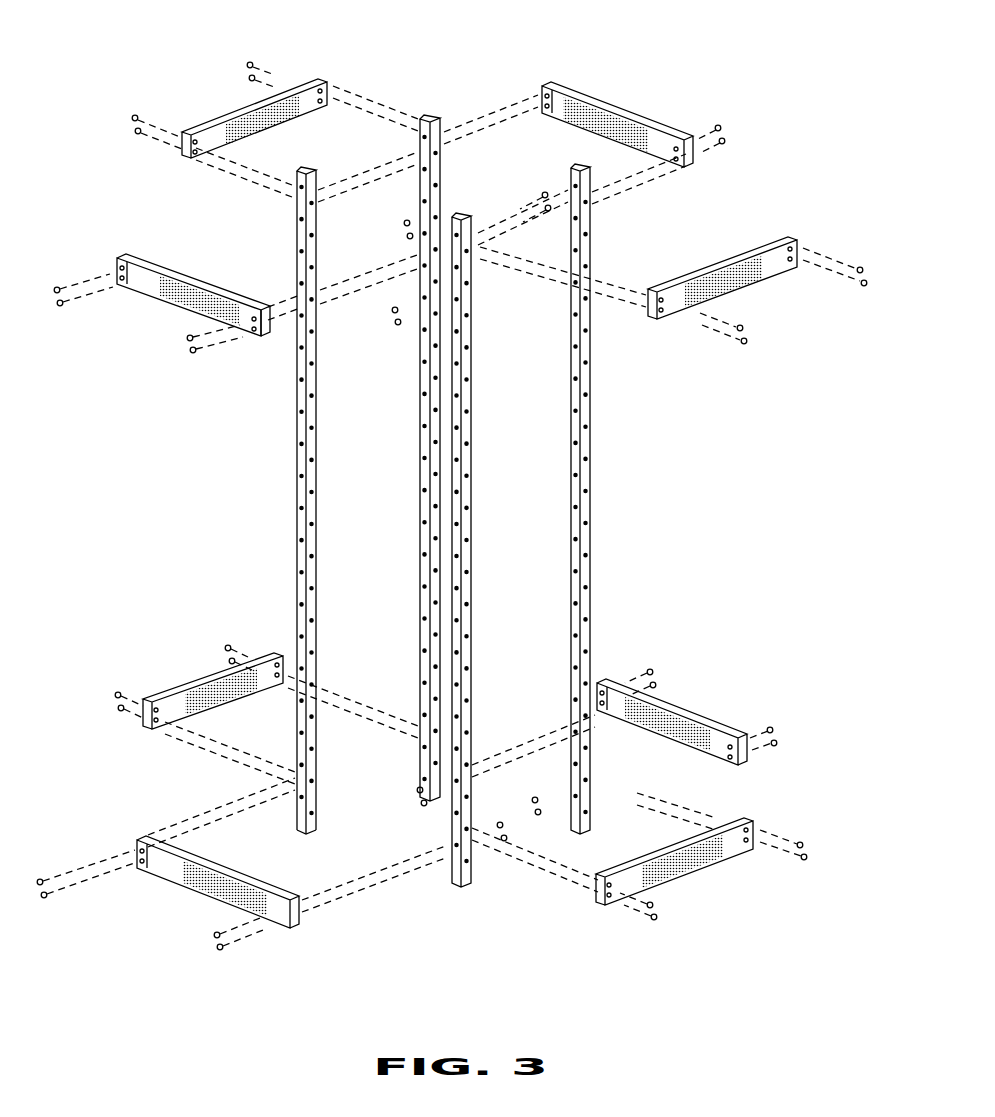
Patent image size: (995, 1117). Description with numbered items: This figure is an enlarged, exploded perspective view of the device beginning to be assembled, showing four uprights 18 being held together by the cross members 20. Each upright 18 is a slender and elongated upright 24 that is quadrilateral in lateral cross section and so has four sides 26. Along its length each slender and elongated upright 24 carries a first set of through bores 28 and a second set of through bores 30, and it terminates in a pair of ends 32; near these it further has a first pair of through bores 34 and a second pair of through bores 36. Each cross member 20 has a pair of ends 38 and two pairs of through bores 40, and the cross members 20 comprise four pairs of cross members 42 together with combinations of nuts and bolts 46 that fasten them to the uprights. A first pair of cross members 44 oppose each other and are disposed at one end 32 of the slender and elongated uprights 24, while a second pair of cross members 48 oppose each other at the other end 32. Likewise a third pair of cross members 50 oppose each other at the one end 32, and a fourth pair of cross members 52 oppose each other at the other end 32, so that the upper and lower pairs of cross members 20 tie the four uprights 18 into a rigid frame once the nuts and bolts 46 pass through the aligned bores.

The upright 18 is at (269, 497).
The cross member 20 is at (241, 93).
The slender and elongated upright 24 is at (292, 497).
The side 26 is at (297, 462).
The first set of through bores 28 is at (308, 571).
The second set of through bores 30 is at (306, 547).
The end 32 is at (304, 167).
The first pair of through bores 34 is at (311, 204).
The second pair of through bores 36 is at (300, 203).
The end 38 is at (117, 266).
The through bores 40 is at (122, 258).
The four pair of cross members 42 is at (243, 98).
The first pair of cross members 44 is at (491, 181).
The combinations of nuts and bolts 46 is at (712, 128).
The second pair of cross members 48 is at (187, 687).
The third pair of cross members 50 is at (360, 218).
The fourth pair of cross members 52 is at (177, 883).